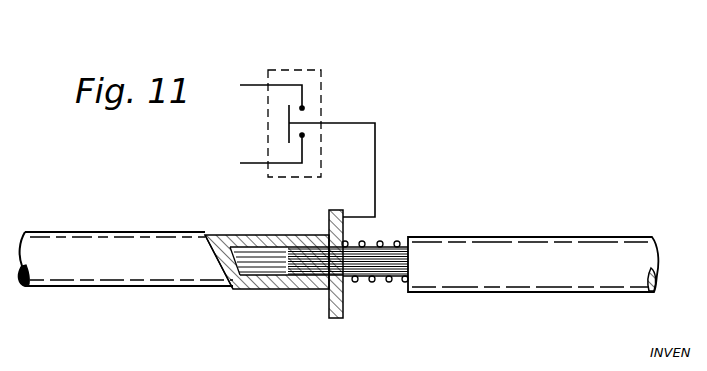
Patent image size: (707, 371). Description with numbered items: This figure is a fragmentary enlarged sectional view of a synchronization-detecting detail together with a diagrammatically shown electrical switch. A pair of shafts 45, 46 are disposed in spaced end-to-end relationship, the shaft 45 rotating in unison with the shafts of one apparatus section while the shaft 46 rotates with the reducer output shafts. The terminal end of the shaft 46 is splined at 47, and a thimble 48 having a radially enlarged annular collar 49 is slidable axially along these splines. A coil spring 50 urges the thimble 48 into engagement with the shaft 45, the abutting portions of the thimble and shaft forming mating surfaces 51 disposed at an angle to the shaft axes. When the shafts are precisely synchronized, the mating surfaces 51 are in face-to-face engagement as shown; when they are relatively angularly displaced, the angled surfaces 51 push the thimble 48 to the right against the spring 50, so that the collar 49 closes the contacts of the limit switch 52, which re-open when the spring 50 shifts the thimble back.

The shaft 45 is at (48, 252).
The shaft 46 is at (530, 250).
The splines 47 is at (388, 247).
The thimble 48 is at (240, 234).
The annular collar 49 is at (338, 313).
The coil spring 50 is at (382, 253).
The mating surface 51 is at (213, 252).
The limit switch 52 is at (318, 66).